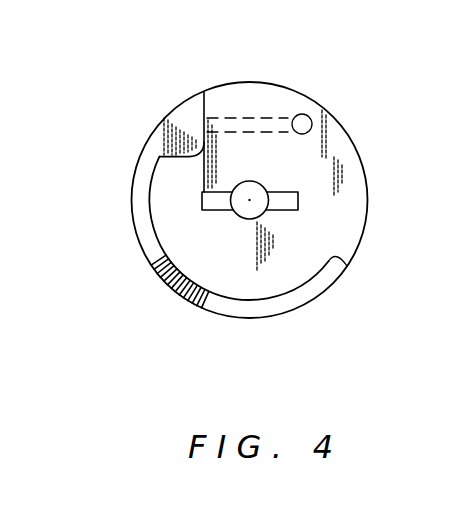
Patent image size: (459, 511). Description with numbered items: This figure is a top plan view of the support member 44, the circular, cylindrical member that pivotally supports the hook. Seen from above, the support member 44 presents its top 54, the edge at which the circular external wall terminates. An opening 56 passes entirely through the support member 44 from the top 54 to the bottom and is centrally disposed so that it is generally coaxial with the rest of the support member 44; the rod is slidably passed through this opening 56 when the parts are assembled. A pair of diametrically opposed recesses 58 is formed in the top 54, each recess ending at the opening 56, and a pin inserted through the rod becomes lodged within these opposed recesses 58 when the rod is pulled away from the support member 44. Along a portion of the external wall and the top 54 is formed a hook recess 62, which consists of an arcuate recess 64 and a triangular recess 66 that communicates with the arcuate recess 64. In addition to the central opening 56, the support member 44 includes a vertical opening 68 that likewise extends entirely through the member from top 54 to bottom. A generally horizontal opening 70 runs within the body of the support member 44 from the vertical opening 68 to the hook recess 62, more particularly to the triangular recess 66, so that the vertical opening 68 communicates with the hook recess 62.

The support member 44 is at (126, 227).
The top 54 is at (318, 151).
The opening 56 is at (260, 214).
The recesses 58 is at (213, 200).
The hook recess 62 is at (199, 309).
The arcuate recess 64 is at (252, 312).
The triangular recess 66 is at (188, 112).
The vertical opening 68 is at (302, 124).
The horizontal opening 70 is at (245, 122).